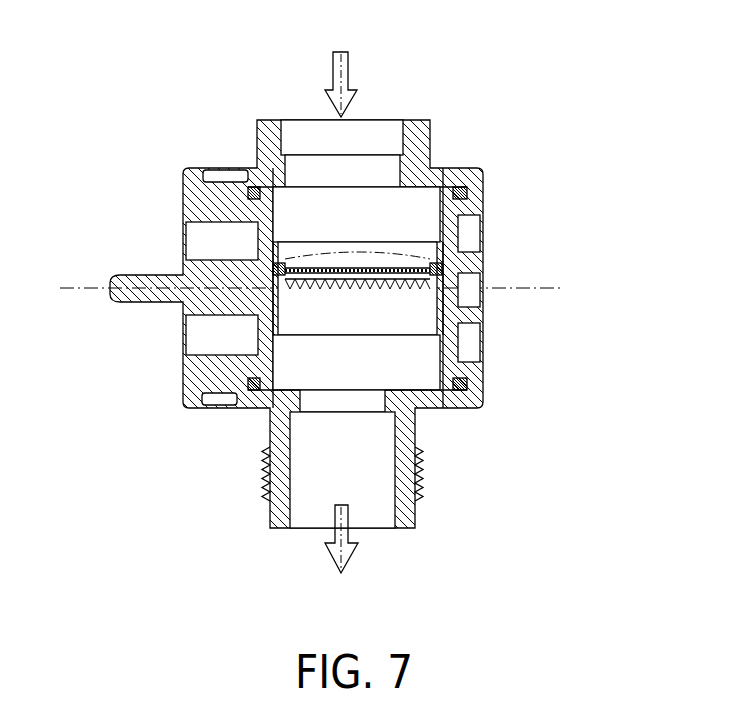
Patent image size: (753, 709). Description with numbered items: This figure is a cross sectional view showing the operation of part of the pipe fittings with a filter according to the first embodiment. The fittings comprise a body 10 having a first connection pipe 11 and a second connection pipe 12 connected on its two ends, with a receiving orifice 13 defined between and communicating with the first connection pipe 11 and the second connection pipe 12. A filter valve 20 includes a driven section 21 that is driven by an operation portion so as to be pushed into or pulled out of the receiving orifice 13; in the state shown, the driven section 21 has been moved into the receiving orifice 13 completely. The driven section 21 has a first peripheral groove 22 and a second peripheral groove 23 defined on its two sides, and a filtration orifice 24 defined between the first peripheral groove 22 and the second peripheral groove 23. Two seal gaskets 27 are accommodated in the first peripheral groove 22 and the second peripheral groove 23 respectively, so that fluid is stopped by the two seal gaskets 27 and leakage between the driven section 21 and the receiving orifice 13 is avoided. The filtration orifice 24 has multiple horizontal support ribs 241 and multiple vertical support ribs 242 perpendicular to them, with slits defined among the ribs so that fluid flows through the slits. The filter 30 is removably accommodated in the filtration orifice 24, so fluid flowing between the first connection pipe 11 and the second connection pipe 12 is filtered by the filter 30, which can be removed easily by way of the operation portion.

The body 10 is at (396, 314).
The first connection pipe 11 is at (297, 132).
The second connection pipe 12 is at (383, 518).
The receiving orifice 13 is at (404, 430).
The filter valve 20 is at (155, 210).
The driven section 21 is at (373, 335).
The first peripheral groove 22 is at (255, 390).
The second peripheral groove 23 is at (539, 413).
The filtration orifice 24 is at (420, 424).
The horizontal support ribs 241 is at (432, 280).
The vertical support ribs 242 is at (403, 288).
The seal gaskets 27 is at (384, 356).
The filter 30 is at (410, 264).